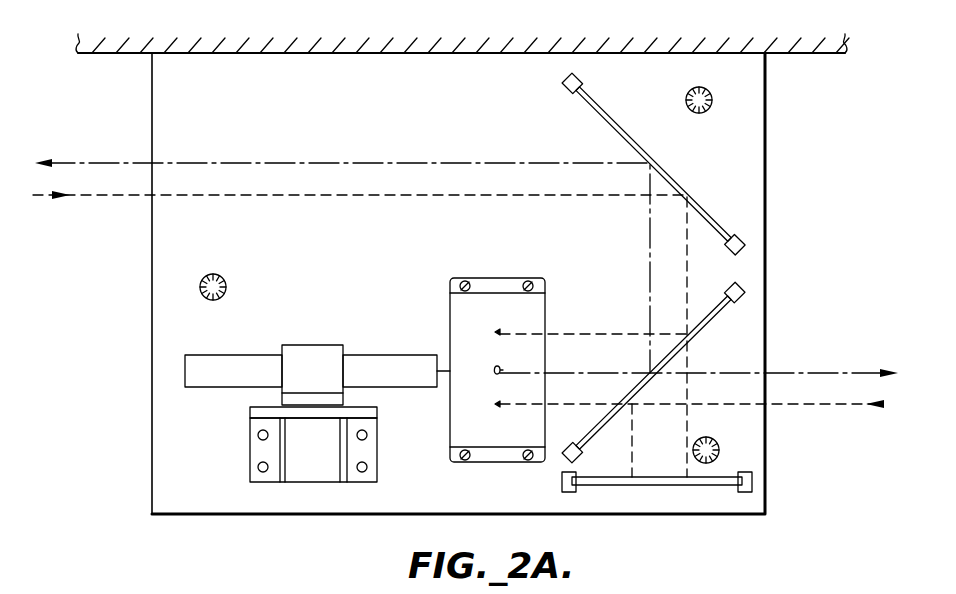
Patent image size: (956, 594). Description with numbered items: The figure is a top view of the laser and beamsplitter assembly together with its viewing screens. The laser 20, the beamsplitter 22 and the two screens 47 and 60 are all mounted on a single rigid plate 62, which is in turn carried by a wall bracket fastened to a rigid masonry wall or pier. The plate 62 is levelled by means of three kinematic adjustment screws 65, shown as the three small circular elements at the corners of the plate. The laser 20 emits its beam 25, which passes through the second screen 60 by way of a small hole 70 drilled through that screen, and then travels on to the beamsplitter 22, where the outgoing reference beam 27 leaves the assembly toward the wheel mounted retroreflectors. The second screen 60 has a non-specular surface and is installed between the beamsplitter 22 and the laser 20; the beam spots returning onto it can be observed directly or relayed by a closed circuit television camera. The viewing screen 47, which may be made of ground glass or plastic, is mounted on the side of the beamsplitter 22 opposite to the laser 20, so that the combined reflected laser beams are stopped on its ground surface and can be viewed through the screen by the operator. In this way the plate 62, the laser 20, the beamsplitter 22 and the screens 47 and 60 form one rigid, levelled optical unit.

The laser 20 is at (368, 355).
The beamsplitter 22 is at (713, 318).
The laser beam 25 is at (322, 163).
The beam 27 is at (845, 373).
The viewing screen 47 is at (653, 487).
The second screen 60 is at (547, 304).
The rigid plate 62 is at (168, 434).
The kinematic adjustment screws 65 is at (700, 113).
The small hole 70 is at (478, 368).